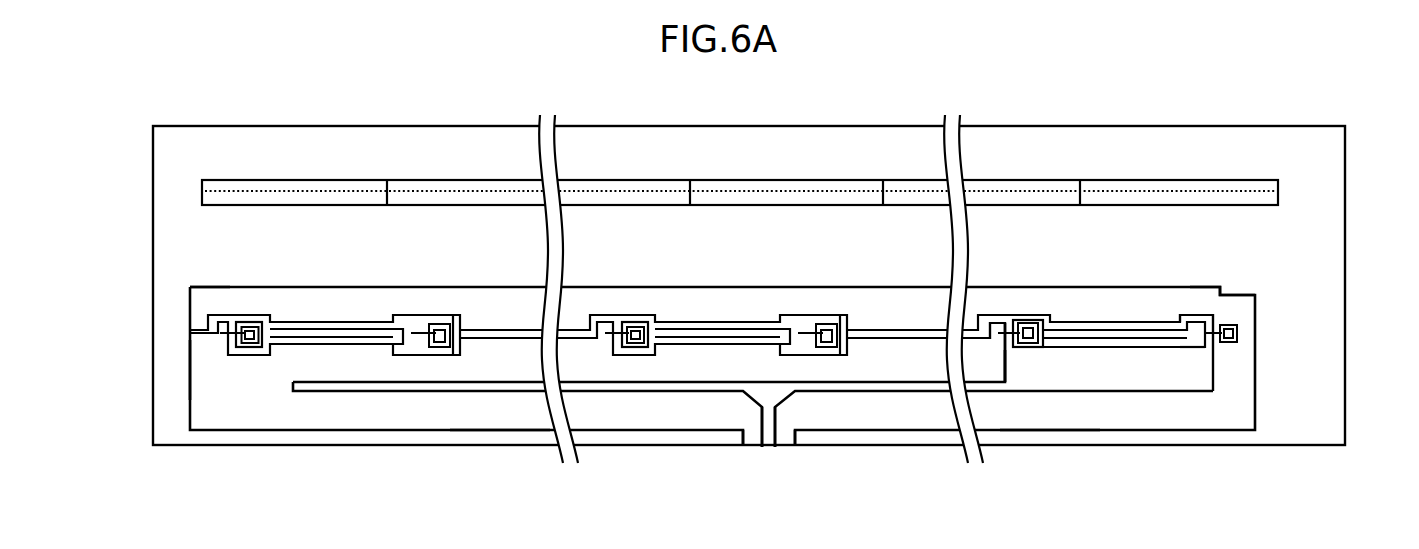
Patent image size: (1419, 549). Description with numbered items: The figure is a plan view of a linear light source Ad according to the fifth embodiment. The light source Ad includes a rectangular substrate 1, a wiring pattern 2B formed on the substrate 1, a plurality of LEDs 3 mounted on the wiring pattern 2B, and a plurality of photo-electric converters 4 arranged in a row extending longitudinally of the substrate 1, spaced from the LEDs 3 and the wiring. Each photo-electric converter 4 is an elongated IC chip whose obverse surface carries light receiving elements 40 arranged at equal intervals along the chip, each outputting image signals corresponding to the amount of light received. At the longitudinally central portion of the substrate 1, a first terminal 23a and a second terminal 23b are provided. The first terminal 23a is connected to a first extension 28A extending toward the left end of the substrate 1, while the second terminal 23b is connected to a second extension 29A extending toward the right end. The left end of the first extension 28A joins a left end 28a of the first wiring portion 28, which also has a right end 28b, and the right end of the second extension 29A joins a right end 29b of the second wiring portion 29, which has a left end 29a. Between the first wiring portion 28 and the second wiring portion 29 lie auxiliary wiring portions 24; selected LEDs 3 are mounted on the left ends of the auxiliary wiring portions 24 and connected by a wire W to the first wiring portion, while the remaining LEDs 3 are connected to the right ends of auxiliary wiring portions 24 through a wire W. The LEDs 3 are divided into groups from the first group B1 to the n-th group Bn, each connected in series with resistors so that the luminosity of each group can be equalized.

The substrate 1 is at (1330, 246).
The linear light source Ad is at (1264, 107).
The photo-electric converter 4 is at (343, 190).
The light receiving element 40 is at (452, 190).
The second wiring portion 29 is at (696, 305).
The left end of second wiring portion 29a is at (197, 303).
The right end of second wiring portion 29b is at (1200, 297).
The second extension 29A is at (1052, 418).
The first wiring portion 28 is at (602, 360).
The left end of first wiring portion 28a is at (210, 357).
The right end of first wiring portion 28b is at (995, 362).
The first extension 28A is at (500, 415).
The first terminal 23a is at (752, 436).
The second terminal 23b is at (783, 436).
The auxiliary wiring portion 24 is at (331, 326).
The LED 3 is at (255, 326).
The wire W is at (243, 326).
The wiring pattern 2B is at (1052, 292).
The first group of LEDs B1 is at (253, 358).
The n-th group of LEDs Bn is at (1196, 358).